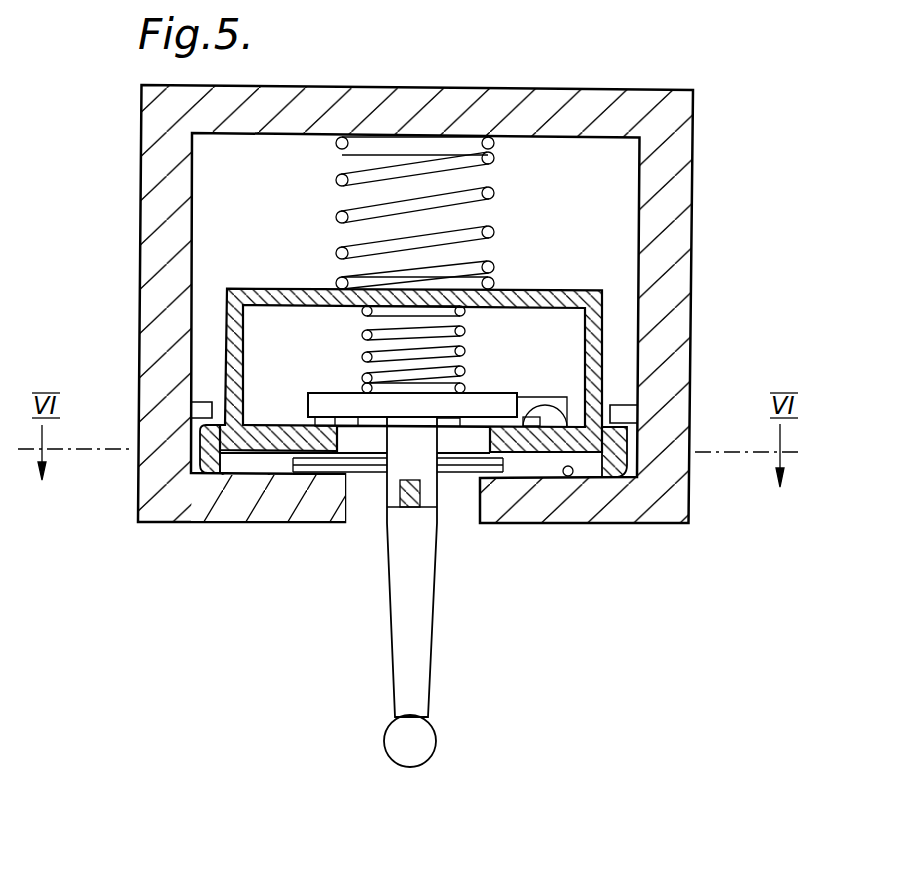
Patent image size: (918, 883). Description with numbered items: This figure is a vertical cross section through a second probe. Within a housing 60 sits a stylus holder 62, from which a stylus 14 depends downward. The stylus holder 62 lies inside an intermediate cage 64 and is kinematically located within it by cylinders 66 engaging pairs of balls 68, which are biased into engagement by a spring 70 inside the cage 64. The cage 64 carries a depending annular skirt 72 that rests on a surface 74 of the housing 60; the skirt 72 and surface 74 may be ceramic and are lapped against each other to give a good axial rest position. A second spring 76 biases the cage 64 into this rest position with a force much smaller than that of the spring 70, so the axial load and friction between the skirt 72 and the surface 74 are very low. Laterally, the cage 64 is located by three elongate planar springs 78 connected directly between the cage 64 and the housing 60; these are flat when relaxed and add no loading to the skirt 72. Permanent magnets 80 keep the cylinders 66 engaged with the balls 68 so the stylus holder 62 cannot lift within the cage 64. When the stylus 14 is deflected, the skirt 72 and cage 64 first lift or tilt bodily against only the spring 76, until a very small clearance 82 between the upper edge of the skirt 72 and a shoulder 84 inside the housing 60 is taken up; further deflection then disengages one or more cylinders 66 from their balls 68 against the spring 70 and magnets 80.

The stylus 14 is at (418, 668).
The housing 60 is at (680, 190).
The stylus holder 62 is at (322, 395).
The intermediate cage 64 is at (603, 330).
The cylinders 66 is at (546, 408).
The balls 68 is at (350, 420).
The spring 70 is at (466, 355).
The annular skirt 72 is at (208, 474).
The surface 74 is at (569, 479).
The spring 76 is at (495, 191).
The elongate planar springs 78 is at (478, 478).
The permanent magnets 80 is at (293, 462).
The clearance 82 is at (200, 437).
The shoulder 84 is at (202, 408).